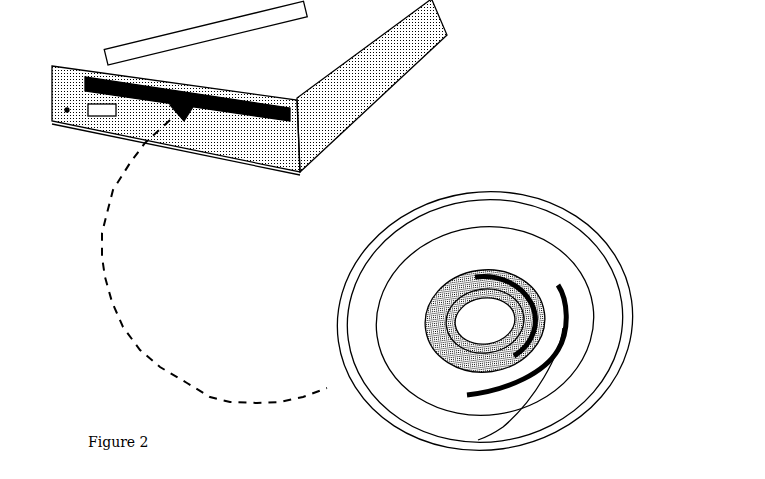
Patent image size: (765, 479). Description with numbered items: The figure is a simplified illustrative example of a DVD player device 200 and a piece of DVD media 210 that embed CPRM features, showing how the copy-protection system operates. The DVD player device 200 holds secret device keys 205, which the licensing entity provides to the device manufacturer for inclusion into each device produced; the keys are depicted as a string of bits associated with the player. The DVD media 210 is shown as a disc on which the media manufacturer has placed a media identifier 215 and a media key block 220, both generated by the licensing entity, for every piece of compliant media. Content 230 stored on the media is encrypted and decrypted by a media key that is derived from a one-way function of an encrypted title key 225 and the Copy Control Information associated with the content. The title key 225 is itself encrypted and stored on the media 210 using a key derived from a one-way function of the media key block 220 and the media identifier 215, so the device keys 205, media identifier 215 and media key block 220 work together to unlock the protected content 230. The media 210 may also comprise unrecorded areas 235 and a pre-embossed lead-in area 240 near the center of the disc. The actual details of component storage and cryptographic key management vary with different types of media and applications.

The DVD player device 200 is at (420, 63).
The secret device keys 205 is at (170, 32).
The DVD media 210 is at (565, 165).
The media identifier 215 is at (512, 277).
The media key block 220 is at (536, 352).
The encrypted title key 225 is at (577, 353).
The content 230 is at (413, 368).
The unrecorded areas 235 is at (578, 377).
The pre-embossed lead-in area 240 is at (462, 362).